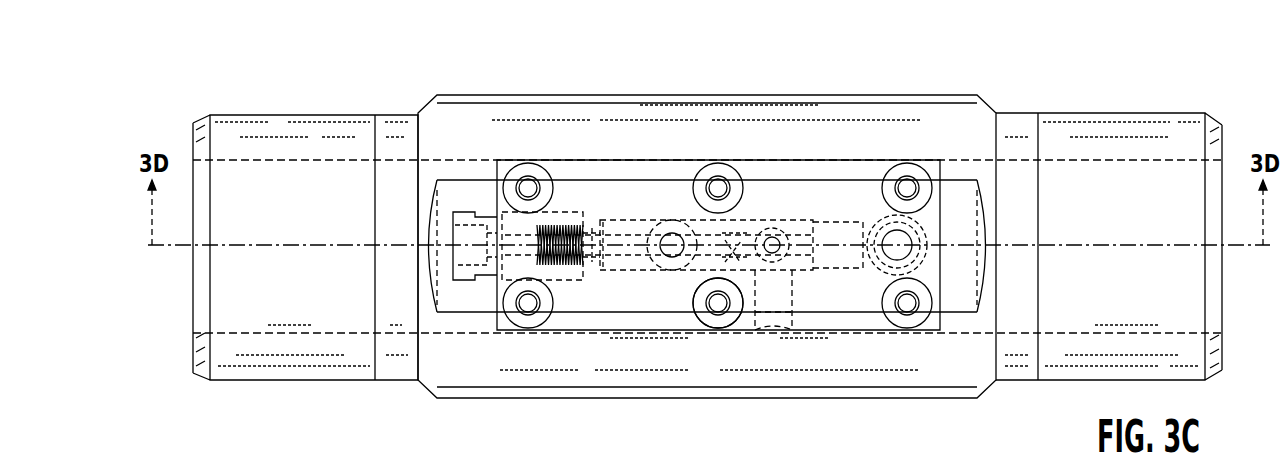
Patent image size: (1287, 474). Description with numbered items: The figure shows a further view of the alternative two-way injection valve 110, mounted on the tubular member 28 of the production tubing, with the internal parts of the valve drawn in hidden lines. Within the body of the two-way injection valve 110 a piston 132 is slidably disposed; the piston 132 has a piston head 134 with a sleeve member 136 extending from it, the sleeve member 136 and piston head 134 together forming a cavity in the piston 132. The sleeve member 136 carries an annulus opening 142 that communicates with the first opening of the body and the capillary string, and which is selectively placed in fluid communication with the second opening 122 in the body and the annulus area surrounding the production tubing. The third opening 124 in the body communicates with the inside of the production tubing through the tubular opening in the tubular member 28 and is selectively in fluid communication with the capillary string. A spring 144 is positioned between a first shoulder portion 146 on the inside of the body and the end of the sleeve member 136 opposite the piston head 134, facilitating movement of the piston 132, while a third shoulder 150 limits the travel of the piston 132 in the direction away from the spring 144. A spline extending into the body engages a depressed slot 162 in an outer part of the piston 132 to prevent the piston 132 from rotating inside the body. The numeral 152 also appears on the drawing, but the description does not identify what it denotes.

The tubular member 28 is at (934, 95).
The two-way injection valve 110 is at (1086, 78).
The second opening 122 is at (783, 293).
The third opening 124 is at (672, 232).
The piston 132 is at (805, 348).
The piston head 134 is at (642, 343).
The sleeve member 136 is at (698, 347).
The annulus opening 142 is at (723, 270).
The spring 144 is at (556, 349).
The first shoulder portion 146 is at (543, 223).
The third shoulder 150 is at (892, 344).
The bolt 152 is at (684, 318).
The depressed slot 162 is at (740, 237).